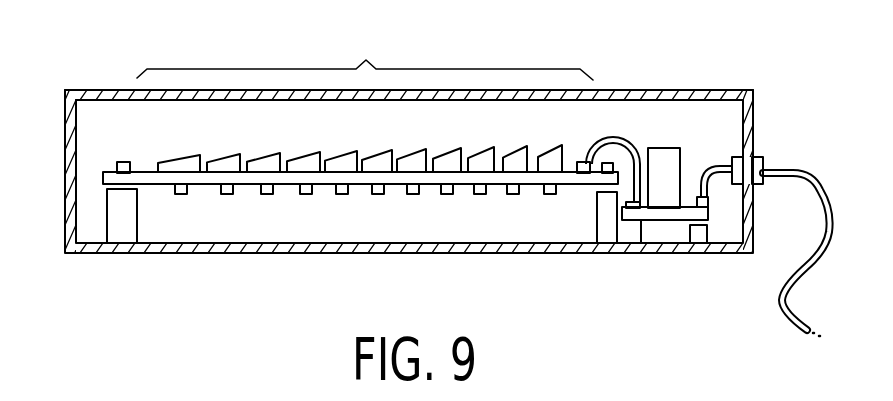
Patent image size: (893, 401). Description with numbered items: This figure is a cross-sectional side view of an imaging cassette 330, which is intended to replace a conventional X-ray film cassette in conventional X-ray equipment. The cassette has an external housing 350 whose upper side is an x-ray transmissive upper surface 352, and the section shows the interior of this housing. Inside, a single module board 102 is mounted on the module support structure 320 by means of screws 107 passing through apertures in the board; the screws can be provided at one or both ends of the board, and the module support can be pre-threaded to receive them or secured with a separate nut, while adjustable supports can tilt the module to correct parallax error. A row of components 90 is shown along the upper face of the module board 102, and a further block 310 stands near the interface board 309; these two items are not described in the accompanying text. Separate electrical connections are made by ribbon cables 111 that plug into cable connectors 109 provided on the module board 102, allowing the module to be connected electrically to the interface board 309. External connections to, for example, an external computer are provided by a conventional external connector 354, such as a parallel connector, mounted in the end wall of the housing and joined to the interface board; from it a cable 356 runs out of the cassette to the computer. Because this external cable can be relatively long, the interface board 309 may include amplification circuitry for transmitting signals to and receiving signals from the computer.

The light guide wedges 90 is at (182, 153).
The module board 102 is at (284, 186).
The screws 107 is at (123, 162).
The cable connectors 109 is at (584, 186).
The ribbon cables 111 is at (588, 150).
The interface board 309 is at (670, 222).
The component block 310 is at (678, 157).
The module support structure 320 is at (120, 232).
The cassette 330 is at (365, 48).
The external housing 350 is at (757, 92).
The x-ray transmissive upper surface 352 is at (97, 88).
The external connector 354 is at (762, 158).
The cable 356 is at (797, 173).